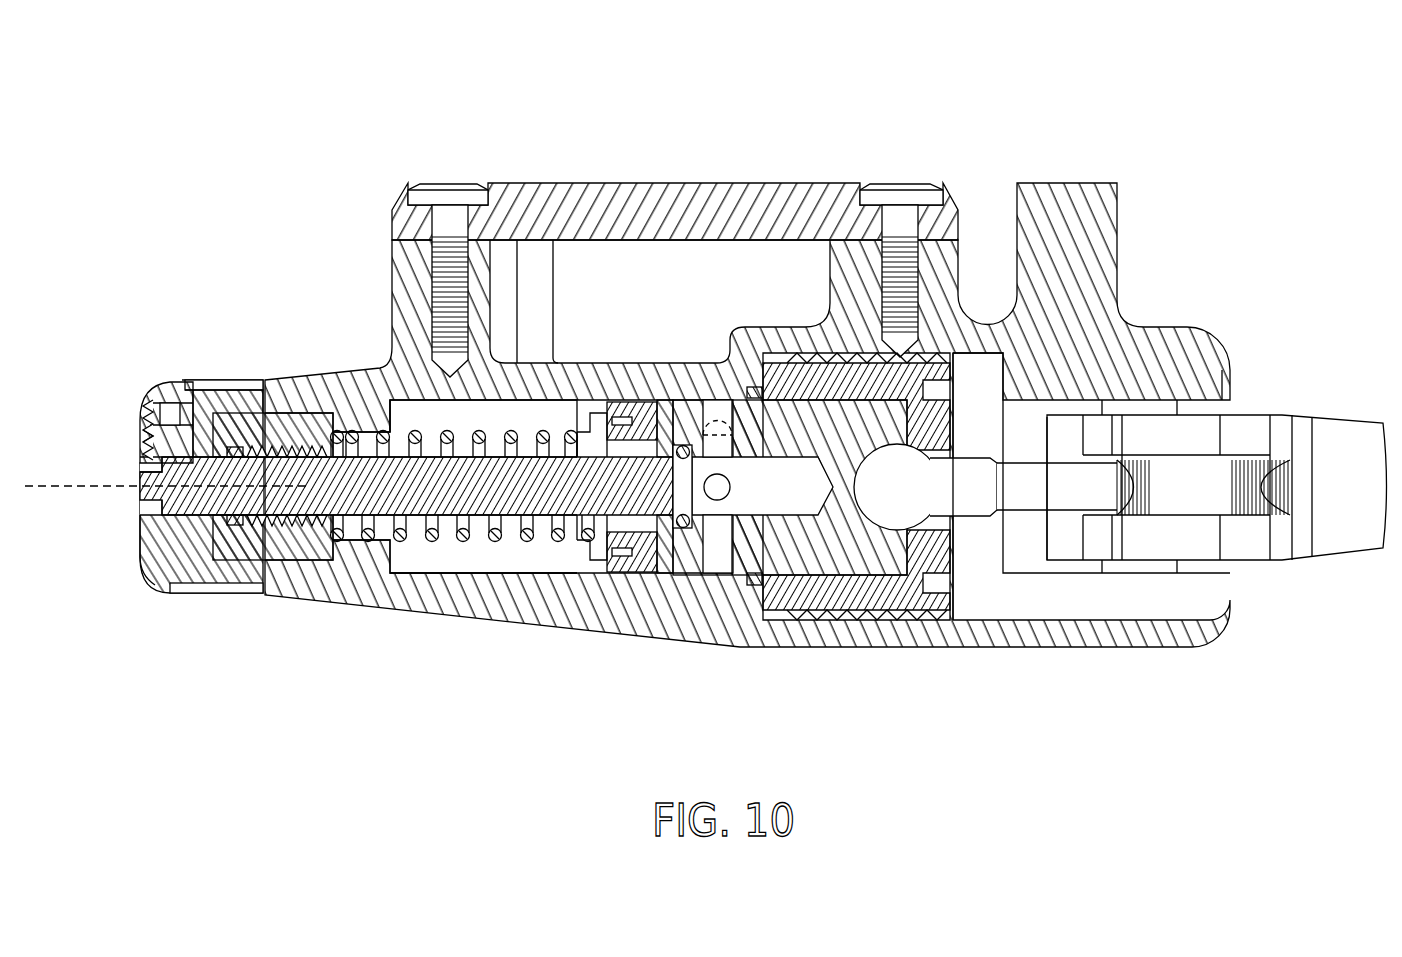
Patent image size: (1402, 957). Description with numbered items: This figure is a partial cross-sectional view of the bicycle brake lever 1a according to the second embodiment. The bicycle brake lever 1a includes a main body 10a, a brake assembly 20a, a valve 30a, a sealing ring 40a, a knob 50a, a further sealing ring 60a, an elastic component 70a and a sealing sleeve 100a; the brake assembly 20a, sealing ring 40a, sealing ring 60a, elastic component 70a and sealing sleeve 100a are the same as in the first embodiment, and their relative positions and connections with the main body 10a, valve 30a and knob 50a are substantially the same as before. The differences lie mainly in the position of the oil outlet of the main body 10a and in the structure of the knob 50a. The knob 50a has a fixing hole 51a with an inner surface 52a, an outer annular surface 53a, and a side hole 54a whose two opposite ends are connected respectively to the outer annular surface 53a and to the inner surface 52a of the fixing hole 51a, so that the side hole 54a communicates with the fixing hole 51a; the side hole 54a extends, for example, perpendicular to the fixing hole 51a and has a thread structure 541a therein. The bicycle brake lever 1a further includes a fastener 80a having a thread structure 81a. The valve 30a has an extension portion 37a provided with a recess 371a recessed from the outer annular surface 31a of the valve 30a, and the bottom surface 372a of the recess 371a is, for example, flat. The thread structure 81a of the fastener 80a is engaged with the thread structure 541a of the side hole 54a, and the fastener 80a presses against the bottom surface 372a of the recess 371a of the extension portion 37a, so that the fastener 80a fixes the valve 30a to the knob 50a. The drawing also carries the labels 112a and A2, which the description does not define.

The bicycle brake lever 1a is at (702, 410).
The main body 10a is at (758, 178).
The brake assembly 20a is at (1290, 398).
The valve 30a is at (418, 578).
The outer annular surface 31a is at (404, 455).
The extension portion 37a is at (200, 505).
The recess 371a is at (200, 455).
The bottom surface 372a is at (145, 462).
The sealing ring 40a is at (685, 530).
The knob 50a is at (158, 553).
The fixing hole 51a is at (140, 518).
The inner surface 52a is at (290, 500).
The outer annular surface 53a is at (205, 378).
The side hole 54a is at (148, 388).
The thread structure 541a is at (163, 403).
The sealing ring 60a is at (237, 527).
The elastic component 70a is at (497, 515).
The fastener 80a is at (145, 432).
The thread structure 81a is at (145, 450).
The sealing sleeve 100a is at (632, 574).
The spring seat 112a is at (522, 550).
The central axis A2 is at (60, 492).